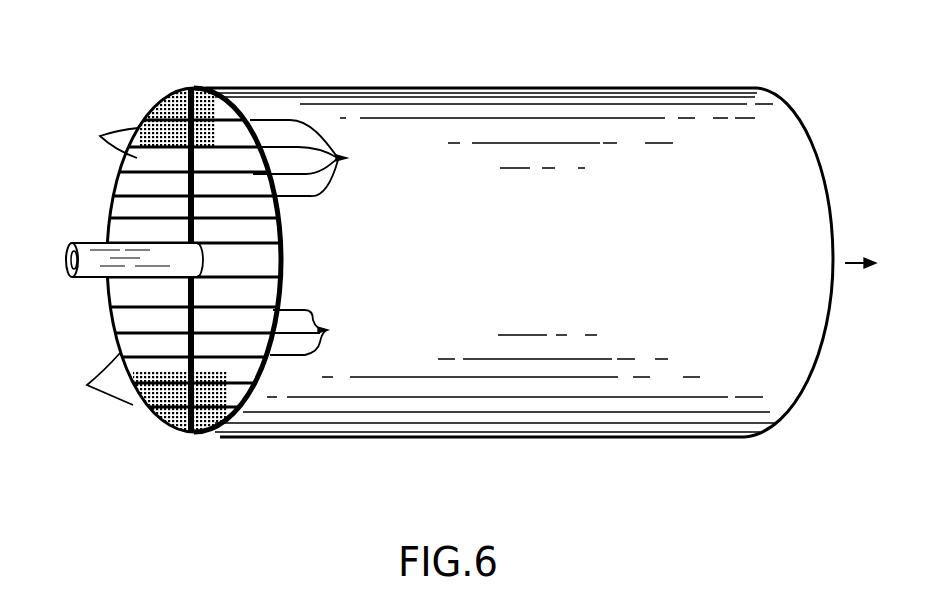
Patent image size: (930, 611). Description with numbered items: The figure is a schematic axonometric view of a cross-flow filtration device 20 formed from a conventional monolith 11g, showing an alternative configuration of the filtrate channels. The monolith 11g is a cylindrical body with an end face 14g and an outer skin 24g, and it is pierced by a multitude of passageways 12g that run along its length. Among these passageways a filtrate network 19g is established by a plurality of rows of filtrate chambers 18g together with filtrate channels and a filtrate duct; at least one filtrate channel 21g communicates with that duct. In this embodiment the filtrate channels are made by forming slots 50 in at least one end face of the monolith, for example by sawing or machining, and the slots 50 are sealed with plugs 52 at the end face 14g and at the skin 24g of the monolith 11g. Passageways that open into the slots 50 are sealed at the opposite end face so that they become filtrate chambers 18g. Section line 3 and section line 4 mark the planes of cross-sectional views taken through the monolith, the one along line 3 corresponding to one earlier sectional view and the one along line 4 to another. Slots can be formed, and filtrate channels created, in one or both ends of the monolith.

The device 20 is at (576, 34).
The filtrate channel 21g is at (292, 85).
The monolith 11g is at (452, 80).
The skin 24g is at (372, 444).
The end face 14g is at (138, 453).
The passageway 12g is at (95, 139).
The filtrate chamber 18g is at (79, 384).
The network 19g is at (86, 304).
The slot 50 is at (317, 158).
The plug 52 is at (312, 332).
The section line 3- 3 is at (258, 78).
The section line 4- 4 is at (668, 78).